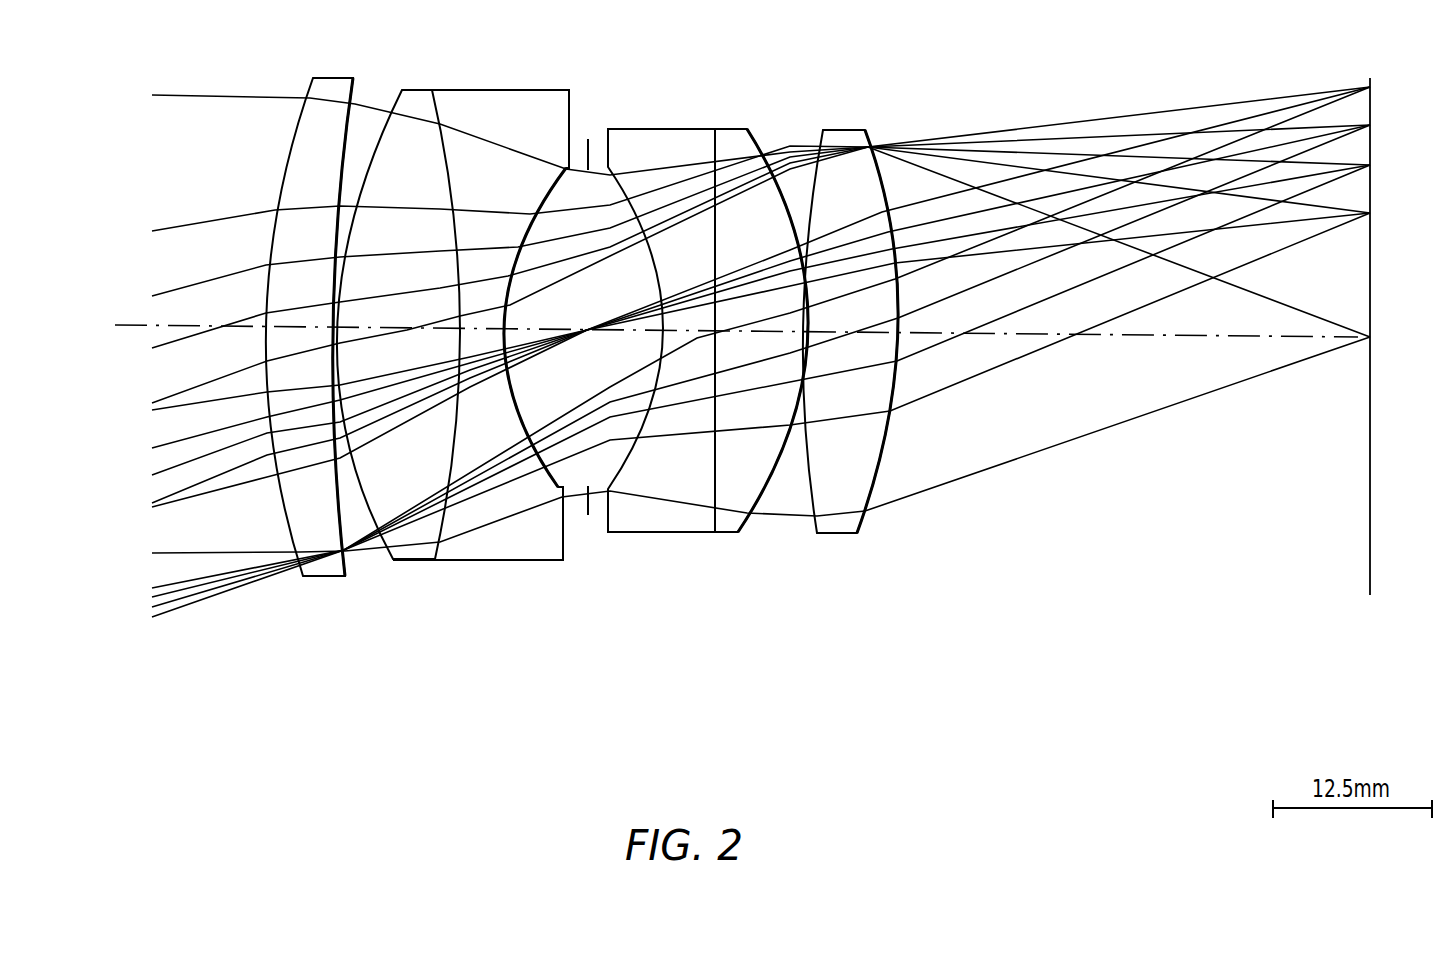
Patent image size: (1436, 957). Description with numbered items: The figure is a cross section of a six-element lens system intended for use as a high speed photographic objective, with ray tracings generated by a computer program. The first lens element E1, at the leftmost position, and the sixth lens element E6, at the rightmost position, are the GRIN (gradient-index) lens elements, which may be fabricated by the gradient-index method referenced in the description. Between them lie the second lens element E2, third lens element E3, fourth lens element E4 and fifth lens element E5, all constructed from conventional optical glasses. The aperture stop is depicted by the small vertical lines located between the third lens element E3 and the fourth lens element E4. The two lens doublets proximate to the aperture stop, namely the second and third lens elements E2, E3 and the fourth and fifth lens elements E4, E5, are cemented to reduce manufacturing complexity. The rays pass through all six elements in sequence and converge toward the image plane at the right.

The first lens element E1 is at (330, 569).
The second lens element E2 is at (409, 568).
The third lens element E3 is at (519, 551).
The fourth lens element E4 is at (663, 524).
The fifth lens element E5 is at (726, 524).
The sixth lens element E6 is at (842, 524).